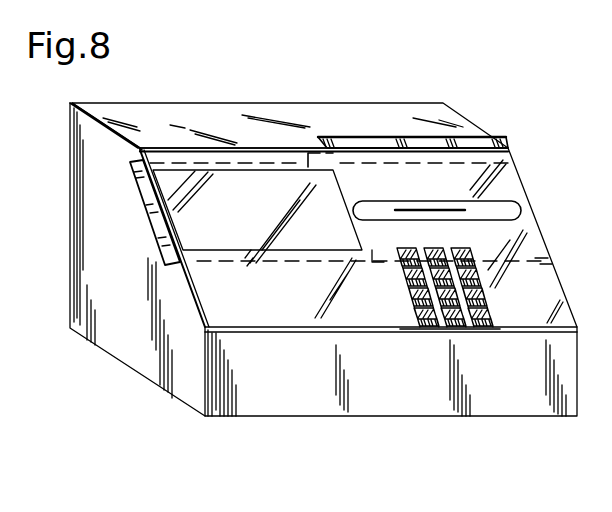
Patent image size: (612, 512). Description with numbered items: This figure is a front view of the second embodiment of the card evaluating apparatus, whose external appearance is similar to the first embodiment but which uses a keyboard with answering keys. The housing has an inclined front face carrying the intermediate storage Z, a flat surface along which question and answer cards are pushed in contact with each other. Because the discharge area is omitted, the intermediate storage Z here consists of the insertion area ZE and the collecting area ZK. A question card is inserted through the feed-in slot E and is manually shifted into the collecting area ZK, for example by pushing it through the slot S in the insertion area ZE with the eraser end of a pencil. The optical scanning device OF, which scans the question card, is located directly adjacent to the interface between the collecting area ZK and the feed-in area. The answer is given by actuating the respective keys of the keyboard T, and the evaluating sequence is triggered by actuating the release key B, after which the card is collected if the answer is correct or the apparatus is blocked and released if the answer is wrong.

The intermediate storage Z is at (173, 163).
The collecting area ZK is at (235, 190).
The optical scanning device OF is at (318, 165).
The feed-in slot E is at (416, 143).
The insertion area ZE is at (448, 175).
The slot S is at (481, 210).
The keyboard T is at (415, 308).
The release key B is at (458, 327).